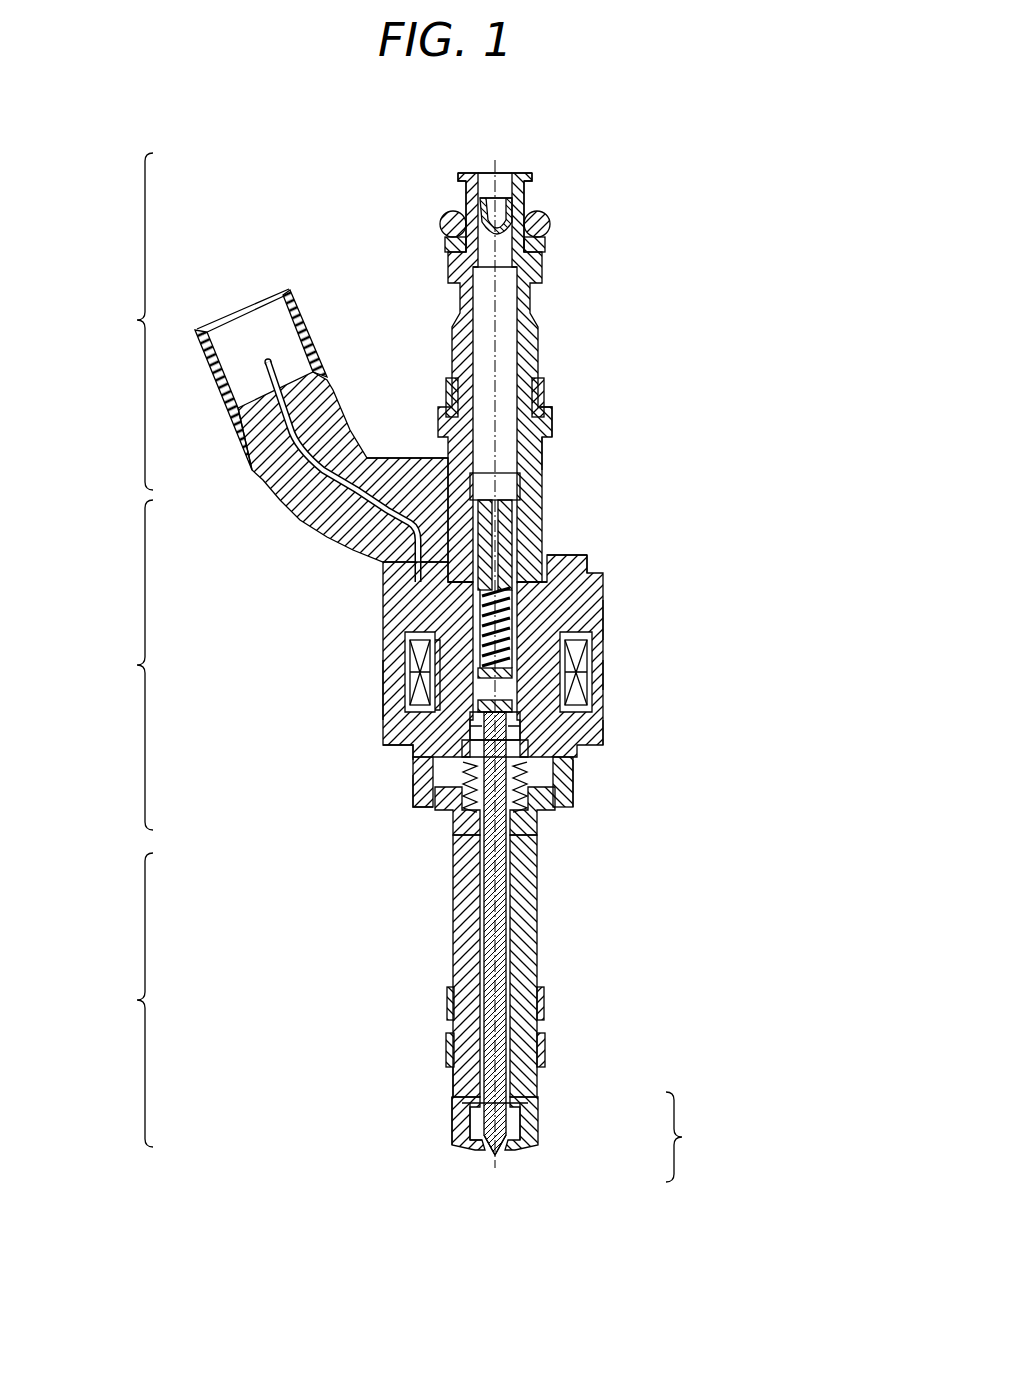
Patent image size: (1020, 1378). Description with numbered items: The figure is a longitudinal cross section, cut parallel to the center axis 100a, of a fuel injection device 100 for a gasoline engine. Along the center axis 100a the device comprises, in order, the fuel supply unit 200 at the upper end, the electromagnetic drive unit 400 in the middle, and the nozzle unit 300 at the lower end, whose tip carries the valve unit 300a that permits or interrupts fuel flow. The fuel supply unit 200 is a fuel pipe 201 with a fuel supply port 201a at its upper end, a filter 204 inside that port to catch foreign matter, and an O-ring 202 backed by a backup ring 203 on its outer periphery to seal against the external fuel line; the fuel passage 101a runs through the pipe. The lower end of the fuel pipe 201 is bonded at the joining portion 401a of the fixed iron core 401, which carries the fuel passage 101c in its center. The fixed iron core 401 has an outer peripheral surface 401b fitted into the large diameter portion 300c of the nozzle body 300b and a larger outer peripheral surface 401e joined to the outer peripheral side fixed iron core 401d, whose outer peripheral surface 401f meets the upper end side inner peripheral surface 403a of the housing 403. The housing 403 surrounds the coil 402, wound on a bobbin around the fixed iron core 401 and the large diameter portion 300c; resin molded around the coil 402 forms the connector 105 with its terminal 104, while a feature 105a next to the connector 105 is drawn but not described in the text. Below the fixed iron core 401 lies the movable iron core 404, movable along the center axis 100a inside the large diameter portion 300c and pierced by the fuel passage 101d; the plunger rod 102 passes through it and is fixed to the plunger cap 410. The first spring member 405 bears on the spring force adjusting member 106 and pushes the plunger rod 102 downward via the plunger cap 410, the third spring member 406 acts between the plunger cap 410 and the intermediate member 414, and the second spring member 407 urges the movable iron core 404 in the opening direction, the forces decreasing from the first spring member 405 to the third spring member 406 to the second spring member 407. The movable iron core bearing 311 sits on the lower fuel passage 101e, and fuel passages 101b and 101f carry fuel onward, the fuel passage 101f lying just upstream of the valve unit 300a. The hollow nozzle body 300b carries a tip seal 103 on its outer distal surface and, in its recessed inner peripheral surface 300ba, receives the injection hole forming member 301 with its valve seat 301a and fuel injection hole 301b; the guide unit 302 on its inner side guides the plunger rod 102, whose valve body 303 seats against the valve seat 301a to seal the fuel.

The fuel injection device 100 is at (100, 186).
The center axis 100a is at (497, 172).
The fuel supply unit 200 is at (118, 321).
The fuel pipe 201 is at (452, 267).
The fuel supply port 201a is at (490, 206).
The filter 204 is at (530, 183).
The O-ring 202 is at (550, 210).
The backup ring 203 is at (548, 240).
The fuel passage 101a is at (542, 282).
The terminal 104 is at (268, 362).
The connector 105 is at (300, 345).
The conductor 105a is at (384, 463).
The spring force adjusting member 106 is at (437, 437).
The fuel passage 101b is at (545, 375).
The fuel passage 101c is at (557, 440).
The joining portion 401a is at (557, 468).
The first spring member 405 is at (556, 535).
The outer peripheral surface 401e is at (600, 573).
The outer peripheral side fixed iron core 401d is at (600, 590).
The upper end side inner peripheral surface 403a is at (601, 610).
The outer peripheral surface 401f is at (603, 622).
The fixed iron core 401 is at (603, 650).
The outer peripheral surface 401b is at (604, 670).
The coil 402 is at (604, 697).
The housing 403 is at (604, 730).
The plunger cap 410 is at (420, 662).
The large diameter portion 300c is at (400, 685).
The intermediate member 414 is at (400, 727).
The movable iron core 404 is at (415, 753).
The lower fuel passage 101e is at (413, 785).
The third spring member 406 is at (580, 752).
The fuel passage 101d is at (577, 790).
The second spring member 407 is at (435, 805).
The nozzle body 300b is at (465, 858).
The movable iron core bearing 311 is at (520, 785).
The plunger rod 102 is at (495, 878).
The electromagnetic drive unit 400 is at (118, 665).
The nozzle unit 300 is at (118, 1000).
The tip seal 103 is at (545, 1042).
The recessed inner peripheral surface 300ba is at (455, 1090).
The valve body 303 is at (530, 1112).
The injection hole forming member 301 is at (533, 1130).
The valve unit 300a is at (704, 1137).
The fuel passage 101f is at (455, 1128).
The guide unit 302 is at (470, 1148).
The valve seat 301a is at (490, 1152).
The fuel injection hole 301b is at (505, 1152).